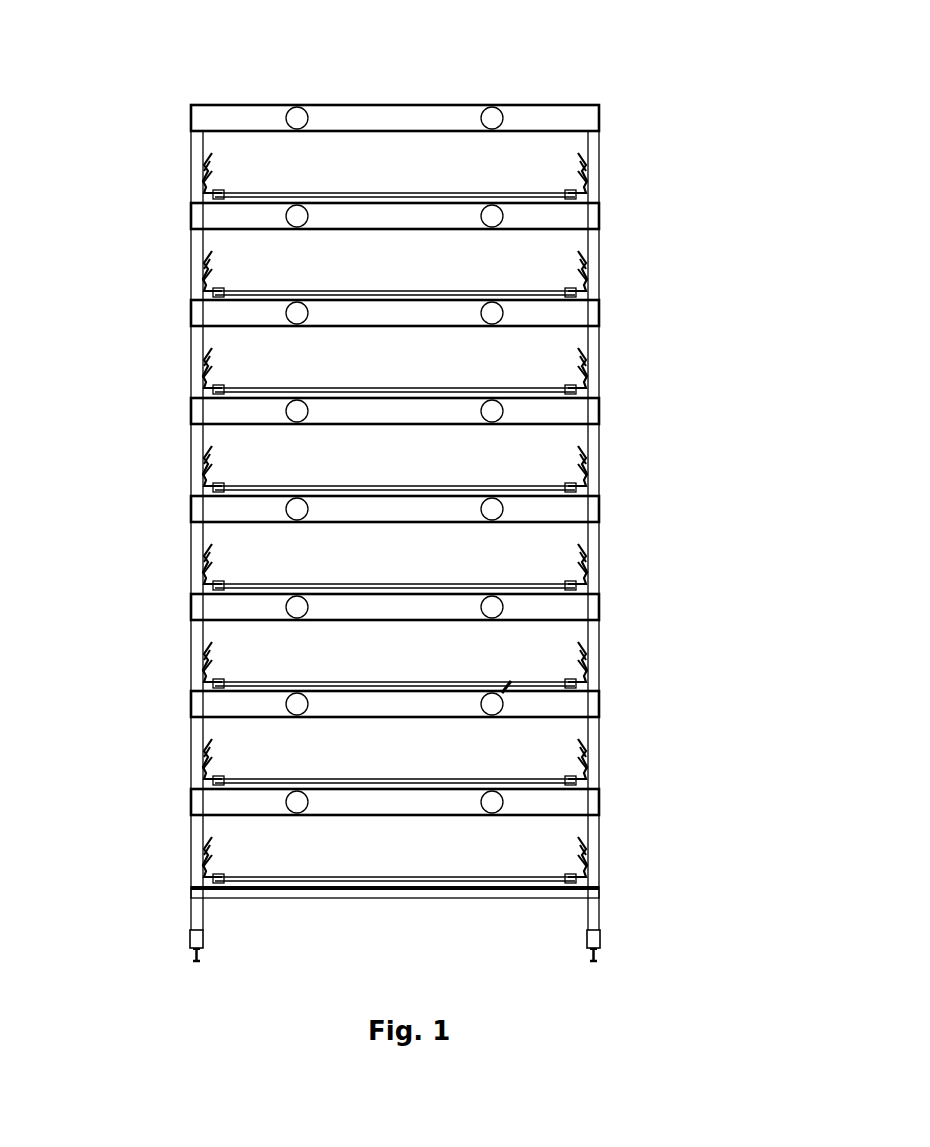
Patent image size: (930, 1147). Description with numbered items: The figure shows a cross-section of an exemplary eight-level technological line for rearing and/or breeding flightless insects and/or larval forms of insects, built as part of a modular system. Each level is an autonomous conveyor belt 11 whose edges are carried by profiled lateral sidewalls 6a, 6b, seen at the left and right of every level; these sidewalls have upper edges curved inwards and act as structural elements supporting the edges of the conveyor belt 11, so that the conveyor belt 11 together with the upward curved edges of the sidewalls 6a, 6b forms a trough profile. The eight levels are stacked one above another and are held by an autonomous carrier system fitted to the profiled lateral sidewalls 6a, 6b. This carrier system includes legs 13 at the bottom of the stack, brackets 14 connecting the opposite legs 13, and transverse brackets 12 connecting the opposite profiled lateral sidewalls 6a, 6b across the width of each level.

The conveyor belt 11 is at (407, 190).
The transverse bracket 12 is at (602, 212).
The leg 13 is at (416, 947).
The bracket 14 is at (551, 118).
The profiled lateral sidewall 6a is at (200, 175).
The profiled lateral sidewall 6b is at (602, 168).